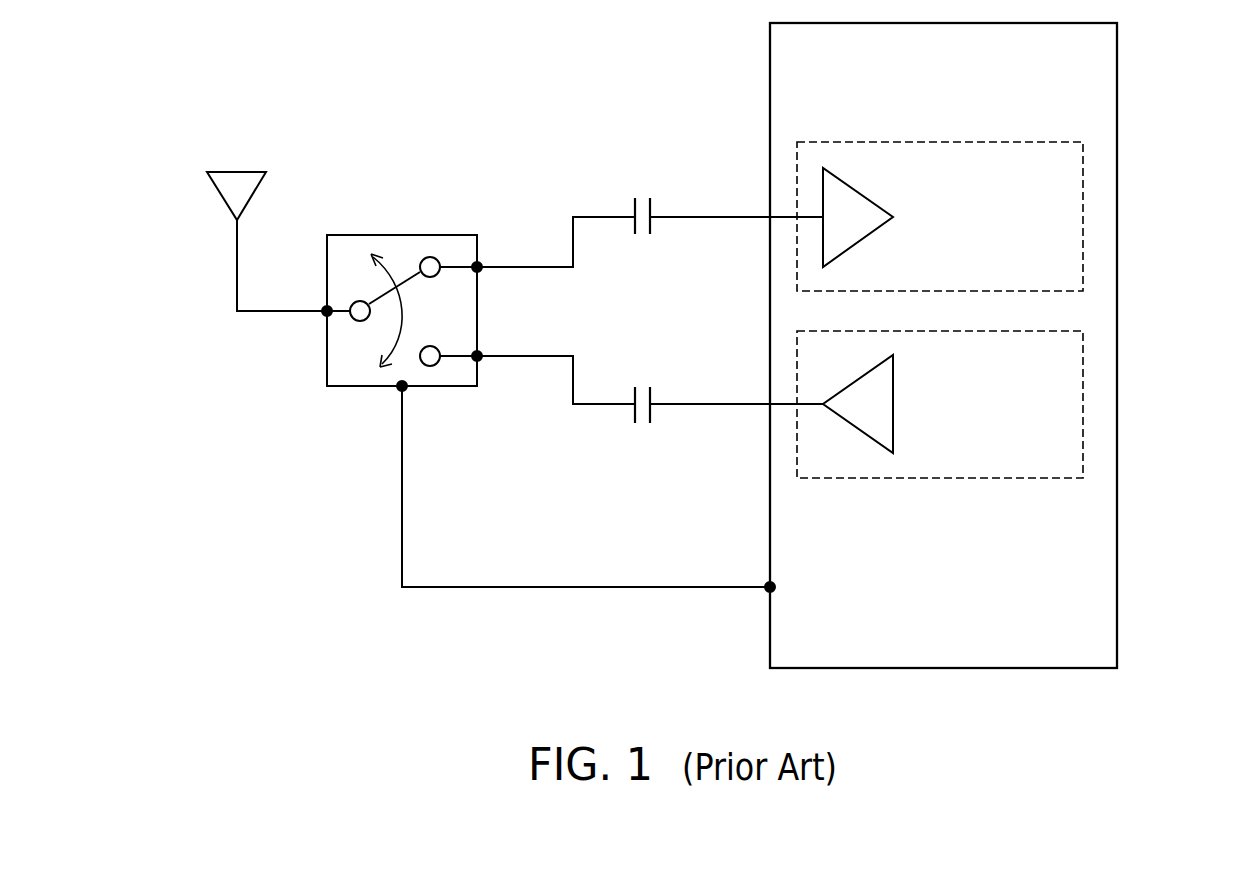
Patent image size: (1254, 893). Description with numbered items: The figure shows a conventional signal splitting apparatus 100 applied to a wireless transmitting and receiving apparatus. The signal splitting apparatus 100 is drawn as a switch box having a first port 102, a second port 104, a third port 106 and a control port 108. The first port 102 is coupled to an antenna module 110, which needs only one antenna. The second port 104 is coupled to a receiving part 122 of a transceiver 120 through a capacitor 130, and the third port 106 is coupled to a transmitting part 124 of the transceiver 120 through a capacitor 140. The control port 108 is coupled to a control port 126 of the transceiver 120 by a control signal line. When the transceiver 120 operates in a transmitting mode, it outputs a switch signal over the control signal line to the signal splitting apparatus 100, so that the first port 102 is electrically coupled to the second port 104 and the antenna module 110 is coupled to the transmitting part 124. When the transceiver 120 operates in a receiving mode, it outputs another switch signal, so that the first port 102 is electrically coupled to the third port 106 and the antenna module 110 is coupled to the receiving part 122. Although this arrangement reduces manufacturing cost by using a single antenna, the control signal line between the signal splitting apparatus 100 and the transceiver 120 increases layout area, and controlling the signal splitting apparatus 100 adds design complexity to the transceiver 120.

The signal splitting apparatus 100 is at (327, 370).
The first port 102 is at (326, 313).
The second port 104 is at (479, 265).
The third port 106 is at (479, 359).
The control port 108 is at (400, 389).
The antenna module 110 is at (222, 198).
The transceiver 120 is at (1118, 345).
The receiving part 122 is at (1061, 141).
The transmitting part 124 is at (1062, 479).
The control port 126 is at (768, 591).
The capacitor 130 is at (645, 190).
The capacitor 140 is at (645, 428).